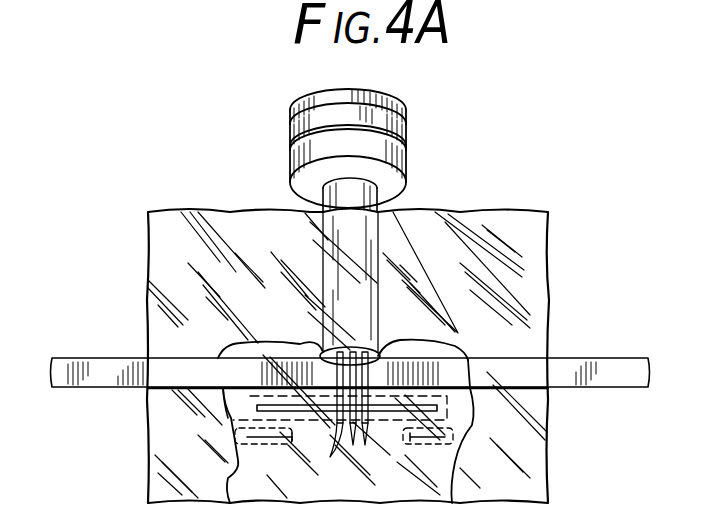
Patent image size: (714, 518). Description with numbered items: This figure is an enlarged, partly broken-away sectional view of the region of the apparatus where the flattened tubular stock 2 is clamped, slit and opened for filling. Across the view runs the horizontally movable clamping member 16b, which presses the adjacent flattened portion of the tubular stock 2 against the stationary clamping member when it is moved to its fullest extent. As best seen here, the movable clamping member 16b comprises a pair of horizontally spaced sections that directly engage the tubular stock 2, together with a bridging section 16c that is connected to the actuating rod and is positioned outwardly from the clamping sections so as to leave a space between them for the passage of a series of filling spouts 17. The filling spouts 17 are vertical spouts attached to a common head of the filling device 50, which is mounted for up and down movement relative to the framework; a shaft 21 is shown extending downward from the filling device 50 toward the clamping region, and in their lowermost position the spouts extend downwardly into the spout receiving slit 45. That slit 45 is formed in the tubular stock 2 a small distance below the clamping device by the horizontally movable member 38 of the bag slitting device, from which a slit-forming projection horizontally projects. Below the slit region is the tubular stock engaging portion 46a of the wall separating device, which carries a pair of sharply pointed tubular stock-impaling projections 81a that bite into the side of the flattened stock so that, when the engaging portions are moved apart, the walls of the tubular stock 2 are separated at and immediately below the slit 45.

The tubular stock 2 is at (548, 270).
The filling device 50 is at (300, 90).
The shaft 21 is at (325, 197).
The movable clamping member 16b is at (162, 378).
The bridging section 16c is at (312, 352).
The filling spouts 17 is at (338, 442).
The horizontally movable member 38 is at (445, 412).
The tubular stock-impaling projections 81a is at (245, 438).
The spout receiving slit 45 is at (223, 423).
The tubular stock engaging portion 46a is at (236, 466).